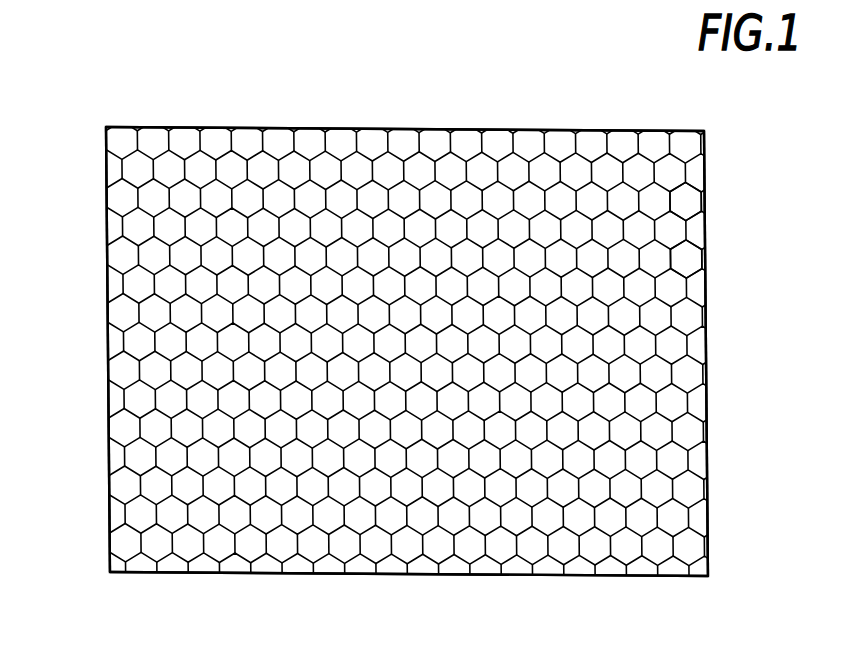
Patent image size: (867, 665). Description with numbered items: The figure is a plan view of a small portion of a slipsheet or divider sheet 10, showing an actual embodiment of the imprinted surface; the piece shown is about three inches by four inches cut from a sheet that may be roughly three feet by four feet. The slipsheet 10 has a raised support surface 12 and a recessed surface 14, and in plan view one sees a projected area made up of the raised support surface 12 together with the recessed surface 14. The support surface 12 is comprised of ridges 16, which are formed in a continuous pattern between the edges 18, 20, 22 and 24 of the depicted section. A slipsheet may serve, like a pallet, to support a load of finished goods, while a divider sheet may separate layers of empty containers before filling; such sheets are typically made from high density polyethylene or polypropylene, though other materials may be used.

The slipsheet or divider sheet 10 is at (408, 111).
The support surface 12 is at (690, 211).
The recessed surface 14 is at (690, 261).
The ridges 16 is at (709, 350).
The edge 18 is at (711, 404).
The edge 20 is at (393, 576).
The edge 22 is at (108, 403).
The edge 24 is at (275, 128).